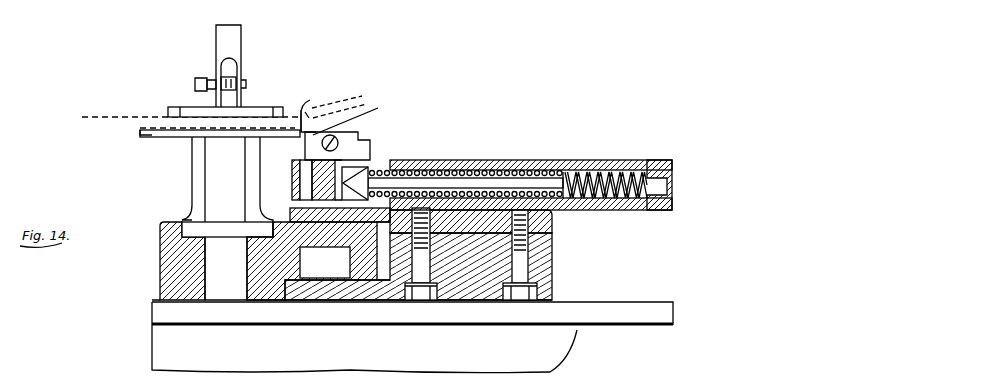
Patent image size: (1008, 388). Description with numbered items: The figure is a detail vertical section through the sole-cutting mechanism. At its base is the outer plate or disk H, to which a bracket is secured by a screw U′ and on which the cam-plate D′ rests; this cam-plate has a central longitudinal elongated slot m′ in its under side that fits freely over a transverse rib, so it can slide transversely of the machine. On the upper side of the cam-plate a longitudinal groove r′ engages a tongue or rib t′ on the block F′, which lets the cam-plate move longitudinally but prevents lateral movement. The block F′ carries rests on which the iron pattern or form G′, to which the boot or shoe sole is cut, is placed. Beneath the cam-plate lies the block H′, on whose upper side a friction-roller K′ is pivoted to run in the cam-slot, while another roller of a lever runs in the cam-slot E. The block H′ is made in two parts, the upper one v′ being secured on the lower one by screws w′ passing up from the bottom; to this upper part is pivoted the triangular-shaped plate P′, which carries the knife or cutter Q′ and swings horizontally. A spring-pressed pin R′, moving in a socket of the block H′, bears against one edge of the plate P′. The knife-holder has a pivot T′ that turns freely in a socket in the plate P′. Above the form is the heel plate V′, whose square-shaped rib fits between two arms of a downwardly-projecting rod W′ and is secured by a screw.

The outer plate or disk H is at (412, 337).
The block H′ is at (547, 250).
The cam-plate D′ is at (162, 258).
The tongue or rib t′ is at (227, 229).
The longitudinal groove r′ is at (220, 242).
The central longitudinal elongated slot m′ is at (247, 280).
The cam-slot E is at (300, 257).
The friction-roller K′ is at (323, 265).
The upper part of block v′ is at (553, 222).
The screws w′ is at (206, 68).
The pin R′ is at (428, 184).
The pivot T′ is at (304, 160).
The triangular-shaped plate P′ is at (307, 186).
The knife or cutter Q′ is at (311, 107).
The iron pattern or form G′ is at (143, 137).
The block F′ is at (227, 187).
The screw U′ is at (178, 110).
The heel plate V′ is at (253, 112).
The downwardly-projecting rod W′ is at (235, 44).